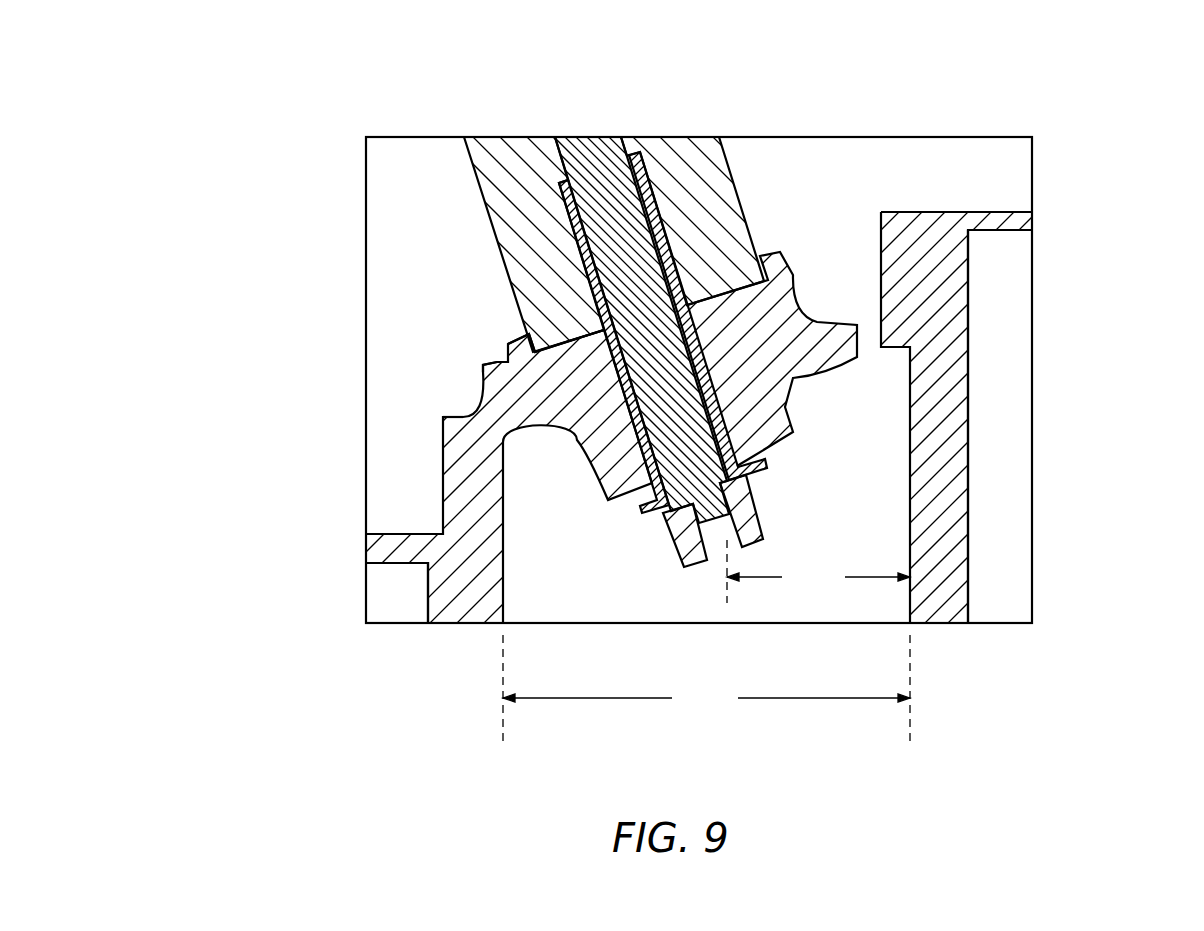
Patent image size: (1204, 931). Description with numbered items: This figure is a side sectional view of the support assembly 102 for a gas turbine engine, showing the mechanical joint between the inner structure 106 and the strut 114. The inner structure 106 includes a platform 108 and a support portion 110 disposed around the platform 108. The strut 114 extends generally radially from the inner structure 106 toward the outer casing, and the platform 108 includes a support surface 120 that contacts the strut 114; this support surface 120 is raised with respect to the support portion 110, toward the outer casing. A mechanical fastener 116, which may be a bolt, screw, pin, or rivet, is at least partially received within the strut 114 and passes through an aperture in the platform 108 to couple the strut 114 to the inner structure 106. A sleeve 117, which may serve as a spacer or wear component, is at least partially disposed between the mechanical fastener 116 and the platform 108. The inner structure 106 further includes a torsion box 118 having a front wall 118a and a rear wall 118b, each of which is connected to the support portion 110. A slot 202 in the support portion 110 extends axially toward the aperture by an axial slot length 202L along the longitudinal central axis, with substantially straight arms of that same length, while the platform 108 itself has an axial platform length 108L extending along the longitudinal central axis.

The support assembly 102 is at (298, 134).
The strut 114 is at (733, 182).
The support surface 120 is at (520, 337).
The support portion 110 is at (493, 365).
The inner structure 106 is at (413, 390).
The sleeve 117 is at (610, 378).
The platform 108 is at (748, 315).
The slot 202 is at (877, 352).
The mechanical fastener 116 is at (763, 503).
The torsion box 118 is at (880, 603).
The front wall 118a is at (427, 605).
The rear wall 118b is at (968, 500).
The axial slot length 202L is at (818, 571).
The axial platform length 108L is at (706, 689).